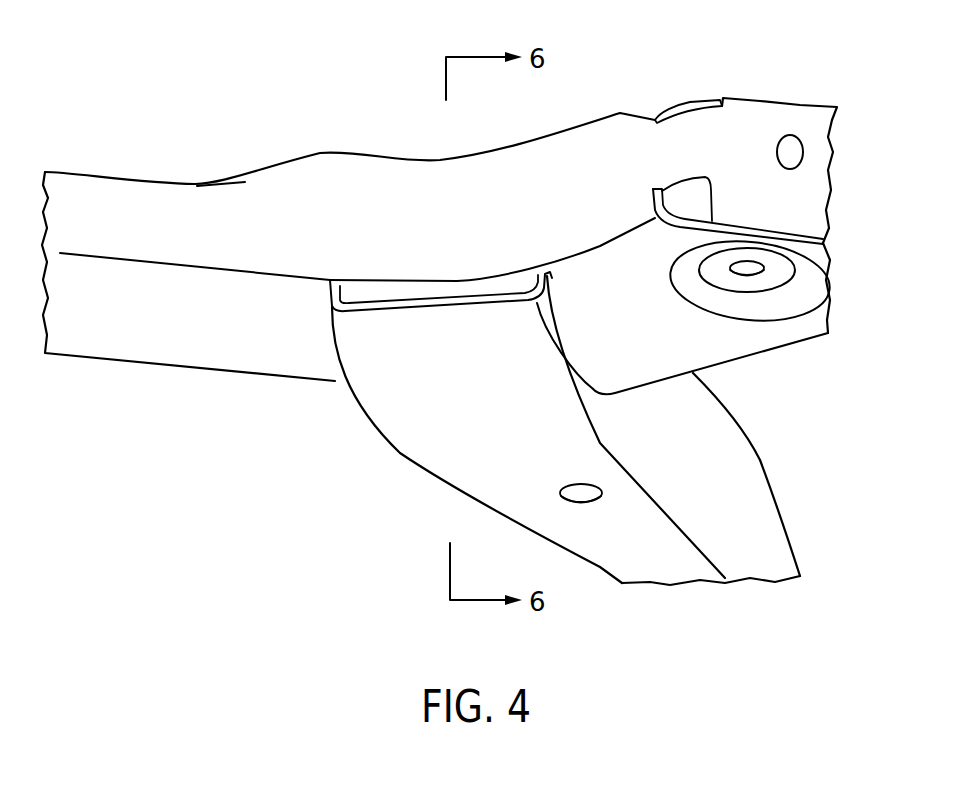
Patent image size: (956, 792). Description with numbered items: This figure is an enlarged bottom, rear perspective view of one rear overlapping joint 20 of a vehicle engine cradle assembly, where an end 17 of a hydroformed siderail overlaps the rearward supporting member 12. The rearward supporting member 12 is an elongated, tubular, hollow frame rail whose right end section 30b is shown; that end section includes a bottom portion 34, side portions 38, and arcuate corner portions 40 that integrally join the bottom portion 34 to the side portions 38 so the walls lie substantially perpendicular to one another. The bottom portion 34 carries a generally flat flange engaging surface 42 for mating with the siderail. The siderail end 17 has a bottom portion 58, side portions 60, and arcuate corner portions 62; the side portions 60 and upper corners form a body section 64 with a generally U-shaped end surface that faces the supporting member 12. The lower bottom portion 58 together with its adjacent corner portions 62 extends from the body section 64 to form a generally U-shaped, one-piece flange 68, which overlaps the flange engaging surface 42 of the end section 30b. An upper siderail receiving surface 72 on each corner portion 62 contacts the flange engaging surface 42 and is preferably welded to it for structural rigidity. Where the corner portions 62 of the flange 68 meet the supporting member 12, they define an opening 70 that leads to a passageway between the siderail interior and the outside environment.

The rearward supporting member 12 is at (362, 153).
The end of siderail 17 is at (792, 453).
The rear overlapping joint 20 is at (778, 381).
The right end section 30b is at (800, 105).
The bottom portion 34 is at (238, 348).
The side portion 38 is at (262, 212).
The arcuate corner portion 40 is at (138, 258).
The flange engaging surface 42 is at (400, 287).
The bottom portion of siderail 58 is at (423, 435).
The side portion of siderail 60 is at (760, 560).
The arcuate corner portion of siderail 62 is at (333, 348).
The body section 64 is at (805, 547).
The flange 68 is at (368, 436).
The opening 70 is at (497, 284).
The siderail receiving surface 72 is at (333, 290).